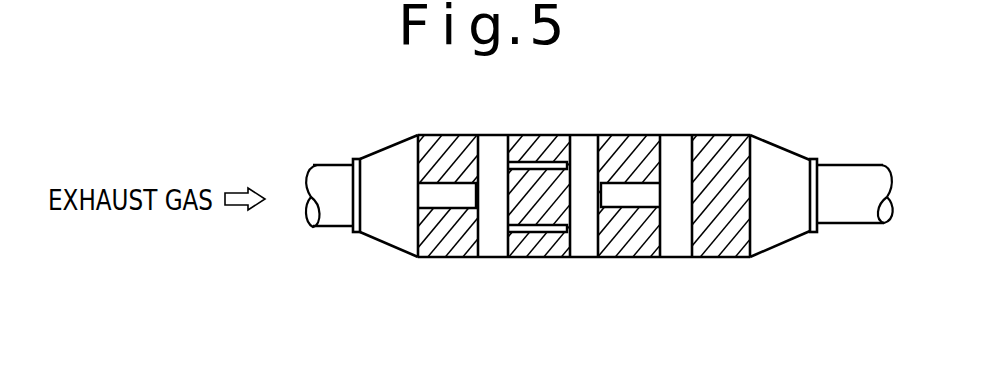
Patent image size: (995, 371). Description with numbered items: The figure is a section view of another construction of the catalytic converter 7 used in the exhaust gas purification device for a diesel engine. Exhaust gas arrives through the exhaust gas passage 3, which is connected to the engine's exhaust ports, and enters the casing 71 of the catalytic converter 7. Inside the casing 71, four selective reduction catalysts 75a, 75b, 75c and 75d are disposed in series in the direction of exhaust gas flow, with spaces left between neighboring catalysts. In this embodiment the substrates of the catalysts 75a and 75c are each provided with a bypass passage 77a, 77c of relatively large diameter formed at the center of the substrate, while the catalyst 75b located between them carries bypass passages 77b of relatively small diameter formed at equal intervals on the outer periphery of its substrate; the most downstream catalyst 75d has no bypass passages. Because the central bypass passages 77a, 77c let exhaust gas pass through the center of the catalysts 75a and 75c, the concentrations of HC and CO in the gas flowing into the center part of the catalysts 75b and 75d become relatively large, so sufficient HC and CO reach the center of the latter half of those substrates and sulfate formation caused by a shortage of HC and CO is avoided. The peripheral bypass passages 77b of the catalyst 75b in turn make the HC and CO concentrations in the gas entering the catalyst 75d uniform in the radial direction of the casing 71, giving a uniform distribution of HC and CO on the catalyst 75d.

The exhaust gas passage 3 is at (335, 216).
The catalytic converter 7 is at (573, 275).
The casing 71 is at (792, 233).
The selective reduction catalyst 75a is at (442, 136).
The selective reduction catalyst 75b is at (535, 136).
The selective reduction catalyst 75c is at (628, 138).
The selective reduction catalyst 75d is at (722, 138).
The bypass passage 77a is at (423, 196).
The bypass passages 77b is at (508, 167).
The bypass passage 77c is at (658, 197).